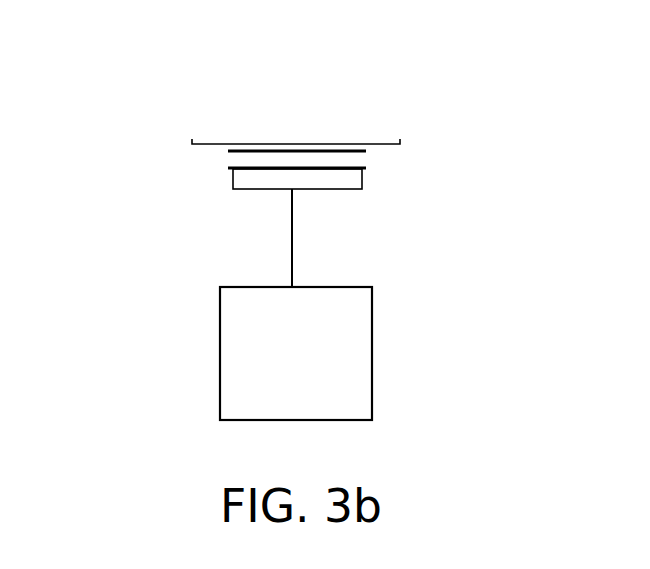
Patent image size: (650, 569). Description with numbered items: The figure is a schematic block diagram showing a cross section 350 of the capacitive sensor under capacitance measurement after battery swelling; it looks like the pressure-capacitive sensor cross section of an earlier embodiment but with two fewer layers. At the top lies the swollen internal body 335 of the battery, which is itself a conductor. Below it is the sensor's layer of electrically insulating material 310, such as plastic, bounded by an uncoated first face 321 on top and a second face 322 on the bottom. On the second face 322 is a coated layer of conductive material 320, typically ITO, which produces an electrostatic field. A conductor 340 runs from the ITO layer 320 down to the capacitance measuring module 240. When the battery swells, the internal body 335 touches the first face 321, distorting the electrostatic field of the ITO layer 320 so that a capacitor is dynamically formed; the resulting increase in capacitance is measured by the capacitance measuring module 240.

The cross section 350 is at (105, 86).
The internal body 335 is at (399, 146).
The layer of electrically insulating material 310 is at (366, 153).
The first face 321 is at (232, 150).
The second face 322 is at (233, 170).
The layer of conductive material 320 is at (362, 180).
The conductor 340 is at (292, 242).
The capacitance measuring module 240 is at (277, 410).